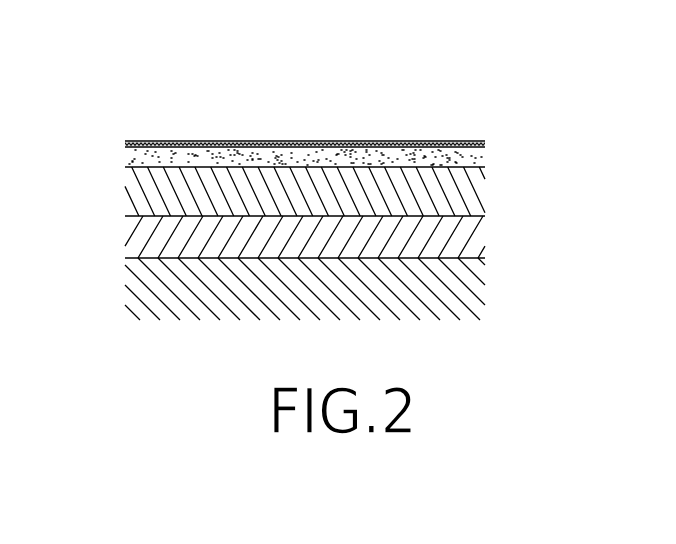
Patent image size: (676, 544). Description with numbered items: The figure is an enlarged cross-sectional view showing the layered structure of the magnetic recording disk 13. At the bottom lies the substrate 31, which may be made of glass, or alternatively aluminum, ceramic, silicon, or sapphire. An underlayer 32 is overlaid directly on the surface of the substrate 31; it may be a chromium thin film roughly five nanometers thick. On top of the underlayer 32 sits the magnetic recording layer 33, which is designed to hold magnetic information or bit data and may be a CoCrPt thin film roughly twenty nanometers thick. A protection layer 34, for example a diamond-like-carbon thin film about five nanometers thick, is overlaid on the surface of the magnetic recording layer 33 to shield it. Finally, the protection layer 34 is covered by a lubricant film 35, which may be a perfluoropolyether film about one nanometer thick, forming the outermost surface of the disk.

The magnetic recording disk 13 is at (203, 137).
The substrate 31 is at (477, 258).
The underlayer 32 is at (145, 215).
The magnetic recording layer 33 is at (477, 164).
The protection layer 34 is at (125, 144).
The lubricant film 35 is at (150, 139).